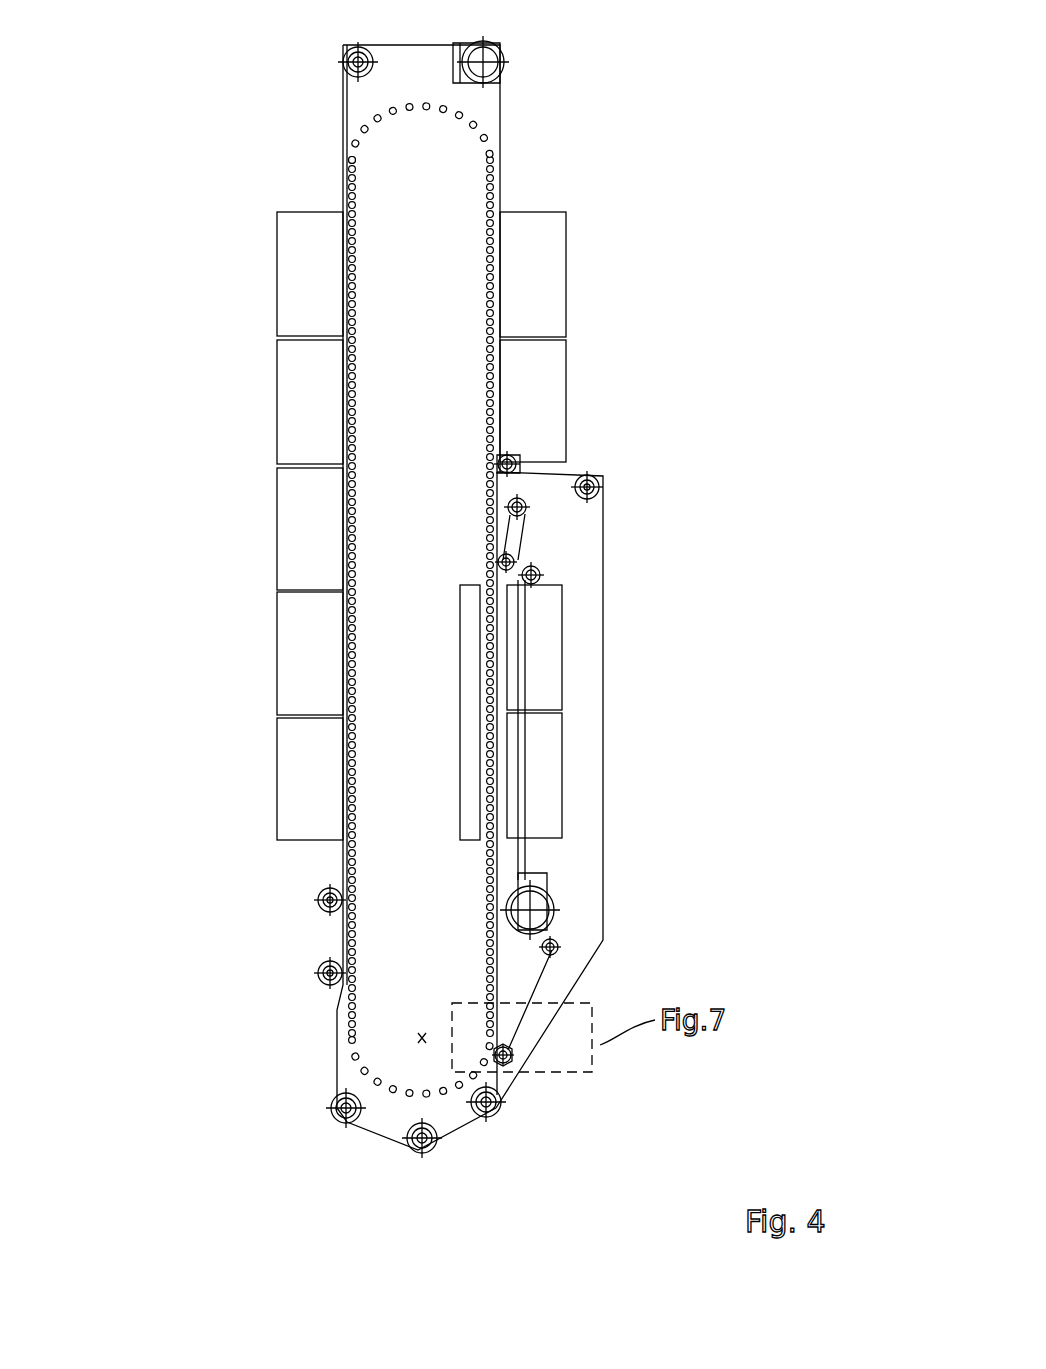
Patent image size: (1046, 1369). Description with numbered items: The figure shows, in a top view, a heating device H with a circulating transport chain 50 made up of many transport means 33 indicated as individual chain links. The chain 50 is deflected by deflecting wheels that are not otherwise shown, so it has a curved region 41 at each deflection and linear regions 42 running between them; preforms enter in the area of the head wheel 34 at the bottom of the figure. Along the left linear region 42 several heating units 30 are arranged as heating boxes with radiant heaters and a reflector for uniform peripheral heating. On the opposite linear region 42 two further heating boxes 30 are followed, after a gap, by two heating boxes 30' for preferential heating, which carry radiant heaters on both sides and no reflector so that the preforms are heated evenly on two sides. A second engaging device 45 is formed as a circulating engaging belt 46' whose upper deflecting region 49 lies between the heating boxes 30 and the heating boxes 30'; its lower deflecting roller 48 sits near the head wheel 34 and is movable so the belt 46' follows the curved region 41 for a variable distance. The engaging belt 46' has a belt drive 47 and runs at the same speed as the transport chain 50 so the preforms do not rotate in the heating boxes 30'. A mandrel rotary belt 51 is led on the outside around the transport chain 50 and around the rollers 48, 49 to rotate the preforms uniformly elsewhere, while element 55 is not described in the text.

The heating device H is at (150, 165).
The heating unit 30 is at (435, 526).
The heating box for preferential heating 30' is at (589, 712).
The transport means 33 is at (340, 940).
The head wheel 34 is at (388, 1038).
The curved region 41 is at (480, 105).
The linear region 42 is at (510, 198).
The second engaging device 45 is at (725, 432).
The engaging belt 46' is at (605, 687).
The belt drive 47 is at (565, 890).
The lower deflecting roller 48 is at (510, 1050).
The upper deflecting region 49 is at (520, 505).
The transport chain 50 is at (350, 1080).
The mandrel rotary belt 51 is at (605, 910).
The guide rail 55 is at (360, 108).